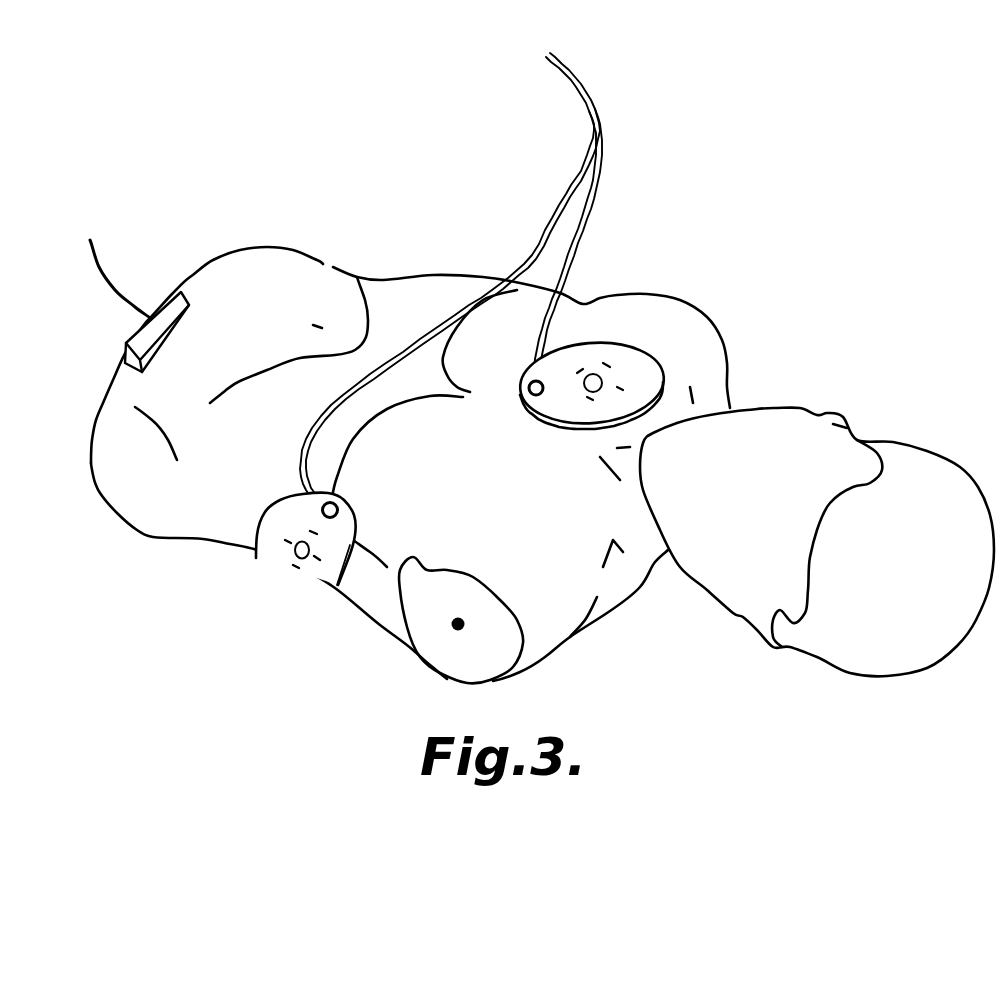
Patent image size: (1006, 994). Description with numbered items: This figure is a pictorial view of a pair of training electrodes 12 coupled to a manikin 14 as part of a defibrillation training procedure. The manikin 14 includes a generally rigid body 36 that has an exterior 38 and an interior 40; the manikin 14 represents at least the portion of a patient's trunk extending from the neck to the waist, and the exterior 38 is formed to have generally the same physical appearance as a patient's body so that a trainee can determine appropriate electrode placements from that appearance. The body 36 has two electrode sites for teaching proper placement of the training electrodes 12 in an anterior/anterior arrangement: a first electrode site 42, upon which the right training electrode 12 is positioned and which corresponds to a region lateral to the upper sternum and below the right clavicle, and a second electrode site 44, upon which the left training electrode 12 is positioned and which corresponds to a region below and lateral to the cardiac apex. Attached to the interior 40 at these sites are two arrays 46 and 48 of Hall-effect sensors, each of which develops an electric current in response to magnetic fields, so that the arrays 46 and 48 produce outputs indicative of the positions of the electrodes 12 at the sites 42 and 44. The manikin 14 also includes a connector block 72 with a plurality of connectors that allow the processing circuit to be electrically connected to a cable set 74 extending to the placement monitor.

The training electrodes 12 is at (268, 562).
The manikin 14 is at (597, 624).
The body 36 is at (145, 536).
The exterior 38 is at (232, 505).
The interior 40 is at (658, 335).
The first electrode site 42 is at (692, 358).
The second electrode site 44 is at (355, 569).
The array of Hall-effect sensors 46 is at (630, 388).
The array of Hall-effect sensors 48 is at (315, 566).
The connector block 72 is at (128, 340).
The cable set 74 is at (122, 280).